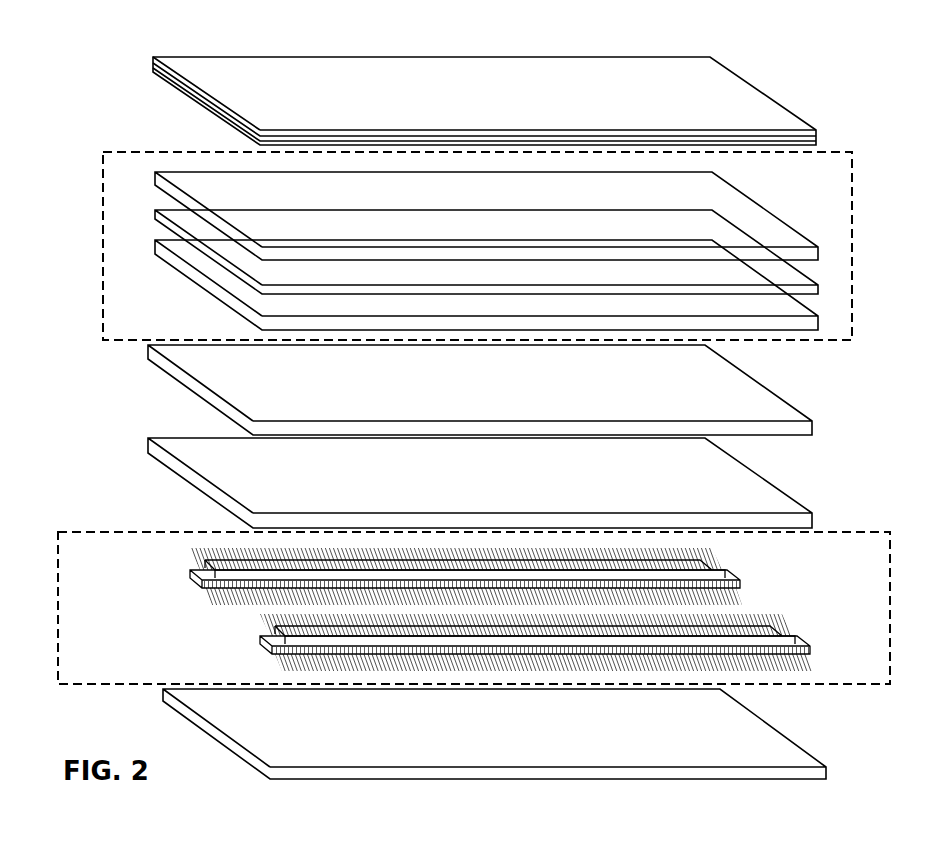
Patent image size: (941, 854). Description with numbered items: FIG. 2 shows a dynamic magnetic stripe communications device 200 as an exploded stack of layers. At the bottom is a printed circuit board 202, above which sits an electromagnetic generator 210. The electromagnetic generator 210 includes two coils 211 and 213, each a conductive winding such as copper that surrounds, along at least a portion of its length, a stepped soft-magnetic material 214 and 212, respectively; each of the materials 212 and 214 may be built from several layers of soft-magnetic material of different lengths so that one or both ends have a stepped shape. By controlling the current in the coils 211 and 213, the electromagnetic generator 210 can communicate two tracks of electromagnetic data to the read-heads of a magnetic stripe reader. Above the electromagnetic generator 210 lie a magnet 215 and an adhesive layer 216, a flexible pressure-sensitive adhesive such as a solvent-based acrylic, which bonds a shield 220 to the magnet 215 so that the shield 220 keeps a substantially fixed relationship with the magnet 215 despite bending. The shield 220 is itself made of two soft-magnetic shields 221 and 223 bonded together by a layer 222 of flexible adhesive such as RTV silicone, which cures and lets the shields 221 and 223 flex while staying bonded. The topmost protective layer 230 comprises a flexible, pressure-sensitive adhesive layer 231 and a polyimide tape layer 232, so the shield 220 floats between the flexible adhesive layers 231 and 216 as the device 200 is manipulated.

The dynamic magnetic stripe communications device 200 is at (897, 363).
The printed circuit board 202 is at (226, 749).
The electromagnetic generator 210 is at (122, 532).
The coil 211 is at (283, 672).
The stepped soft-magnetic material 212 is at (265, 651).
The coil 213 is at (213, 602).
The stepped soft-magnetic material 214 is at (188, 576).
The magnet 215 is at (149, 437).
The adhesive layer 216 is at (160, 370).
The shield 220 is at (168, 152).
The shield 221 is at (155, 248).
The layer 222 is at (155, 211).
The shield 223 is at (155, 178).
The protective layer 230 is at (177, 57).
The adhesive layer 231 is at (170, 79).
The tape layer 232 is at (197, 97).